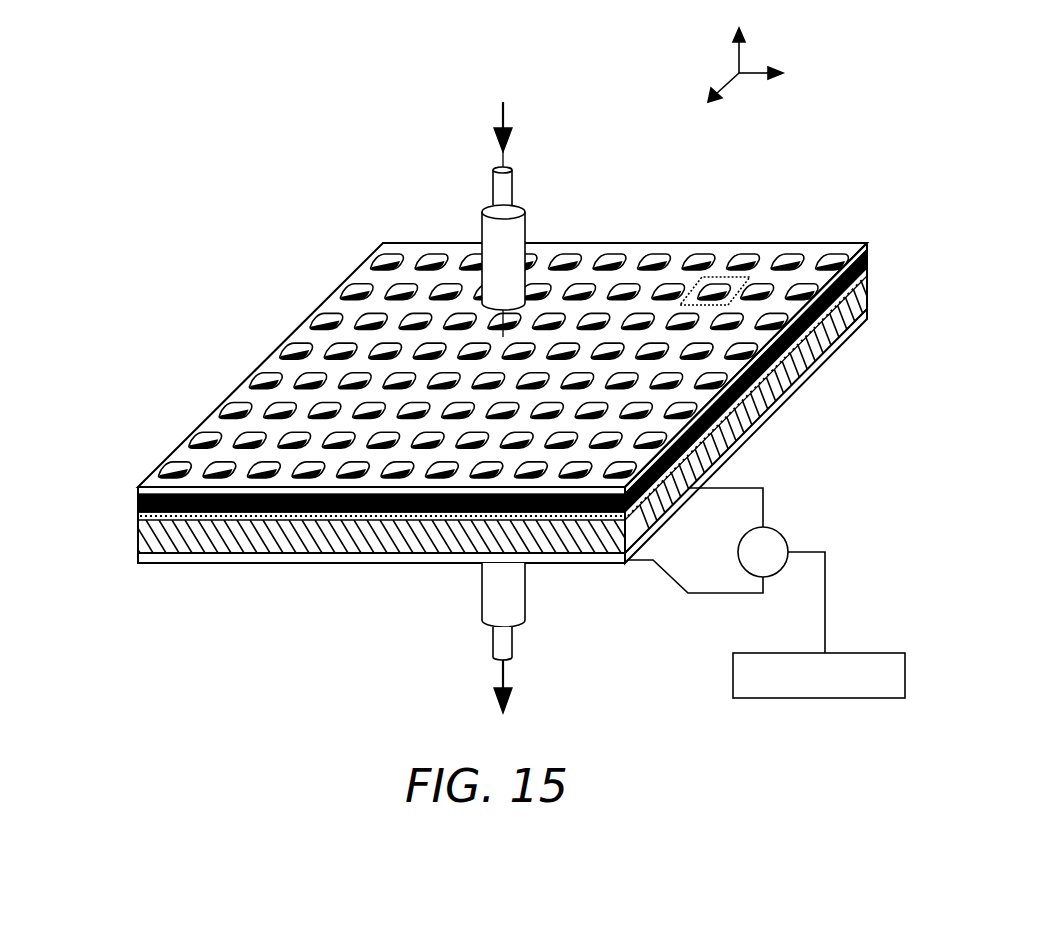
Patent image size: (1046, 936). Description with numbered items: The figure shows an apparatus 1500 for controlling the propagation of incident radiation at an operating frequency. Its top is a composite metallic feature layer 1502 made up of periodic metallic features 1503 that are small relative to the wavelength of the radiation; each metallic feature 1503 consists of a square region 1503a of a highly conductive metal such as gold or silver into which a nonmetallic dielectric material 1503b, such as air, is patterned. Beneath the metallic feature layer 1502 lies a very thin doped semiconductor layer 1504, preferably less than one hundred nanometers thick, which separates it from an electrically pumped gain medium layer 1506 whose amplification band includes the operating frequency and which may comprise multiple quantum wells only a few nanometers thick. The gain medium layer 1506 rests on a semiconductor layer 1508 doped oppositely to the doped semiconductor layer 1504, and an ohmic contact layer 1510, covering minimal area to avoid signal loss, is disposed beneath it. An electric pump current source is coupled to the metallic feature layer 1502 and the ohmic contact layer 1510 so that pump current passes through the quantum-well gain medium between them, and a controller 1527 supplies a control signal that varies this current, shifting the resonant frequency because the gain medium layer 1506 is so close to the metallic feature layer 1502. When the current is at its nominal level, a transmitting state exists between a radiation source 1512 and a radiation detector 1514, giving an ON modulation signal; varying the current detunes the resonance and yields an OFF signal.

The apparatus 1500 is at (162, 148).
The metallic feature layer 1502 is at (245, 393).
The metallic feature 1503 is at (725, 277).
The square region 1503a is at (737, 280).
The nonmetallic dielectric material 1503b is at (710, 283).
The doped semiconductor layer 1504 is at (137, 503).
The gain medium layer 1506 is at (137, 517).
The semiconductor layer 1508 is at (137, 540).
The ohmic contact layer 1510 is at (137, 562).
The radiation source 1512 is at (488, 230).
The radiation detector 1514 is at (488, 612).
The controller 1527 is at (840, 698).